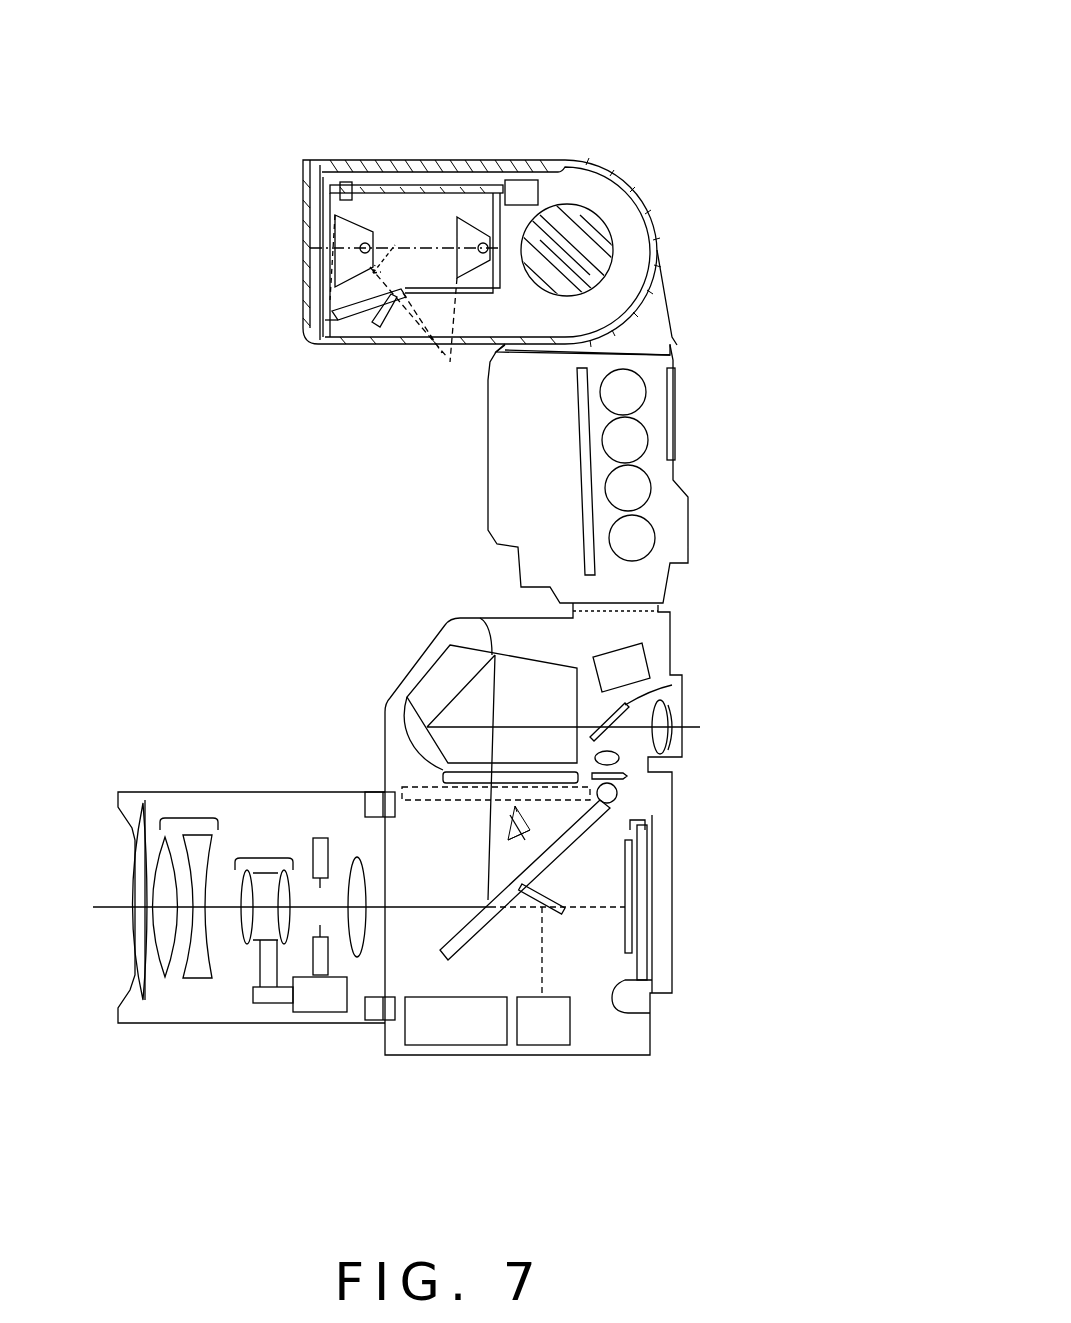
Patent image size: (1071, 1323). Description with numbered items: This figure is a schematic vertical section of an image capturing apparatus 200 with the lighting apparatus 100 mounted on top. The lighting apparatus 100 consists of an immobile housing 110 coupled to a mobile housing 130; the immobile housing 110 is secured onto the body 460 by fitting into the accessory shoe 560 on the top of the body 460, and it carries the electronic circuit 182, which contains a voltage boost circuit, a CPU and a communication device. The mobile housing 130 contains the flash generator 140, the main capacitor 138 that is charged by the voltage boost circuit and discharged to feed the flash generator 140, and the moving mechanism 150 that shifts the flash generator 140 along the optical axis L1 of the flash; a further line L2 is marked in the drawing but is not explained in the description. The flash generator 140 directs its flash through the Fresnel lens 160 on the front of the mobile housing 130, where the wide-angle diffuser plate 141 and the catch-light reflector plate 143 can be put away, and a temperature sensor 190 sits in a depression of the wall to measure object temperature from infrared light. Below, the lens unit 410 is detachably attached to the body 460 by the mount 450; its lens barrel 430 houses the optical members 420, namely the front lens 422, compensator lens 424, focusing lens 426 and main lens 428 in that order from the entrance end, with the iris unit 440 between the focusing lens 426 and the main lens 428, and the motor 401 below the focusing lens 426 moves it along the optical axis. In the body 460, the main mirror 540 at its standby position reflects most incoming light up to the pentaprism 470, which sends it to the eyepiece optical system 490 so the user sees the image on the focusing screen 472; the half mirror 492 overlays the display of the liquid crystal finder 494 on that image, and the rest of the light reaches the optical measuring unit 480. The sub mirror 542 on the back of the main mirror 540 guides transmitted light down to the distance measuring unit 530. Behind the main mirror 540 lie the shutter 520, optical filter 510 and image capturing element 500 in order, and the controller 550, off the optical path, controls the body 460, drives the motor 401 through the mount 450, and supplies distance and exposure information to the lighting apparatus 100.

The image capturing apparatus 200 is at (673, 31).
The lighting apparatus 100 is at (305, 92).
The immobile housing 110 is at (674, 458).
The mobile housing 130 is at (630, 181).
The main capacitor 138 is at (612, 251).
The flash generator 140 is at (447, 345).
The wide-angle diffuser plate 141 is at (356, 160).
The catch-light reflector plate 143 is at (303, 212).
The moving mechanism 150 is at (525, 180).
The Fresnel lens 160 is at (320, 283).
The electronic circuit 182 is at (577, 473).
The temperature sensor 190 is at (365, 343).
The optical axis L1 is at (303, 248).
The second light L2 is at (303, 315).
The motor 401 is at (320, 1003).
The lens unit 410 is at (120, 1118).
The optical members 420 is at (78, 712).
The front lens 422 is at (145, 800).
The compensator lens 424 is at (190, 817).
The focusing lens 426 is at (260, 857).
The main lens 428 is at (357, 857).
The lens barrel 430 is at (197, 1025).
The iris unit 440 is at (253, 983).
The mount 450 is at (380, 1020).
The body 460 is at (653, 1118).
The pentaprism 470 is at (553, 670).
The focusing screen 472 is at (386, 705).
The optical measuring unit 480 is at (650, 660).
The eyepiece optical system 490 is at (670, 712).
The half mirror 492 is at (672, 688).
The liquid crystal finder 494 is at (627, 776).
The image capturing element 500 is at (637, 967).
The optical filter 510 is at (650, 820).
The shutter 520 is at (638, 1013).
The distance measuring unit 530 is at (540, 1045).
The main mirror 540 is at (458, 950).
The sub mirror 542 is at (543, 890).
The controller 550 is at (455, 1045).
The accessory shoe 560 is at (655, 605).